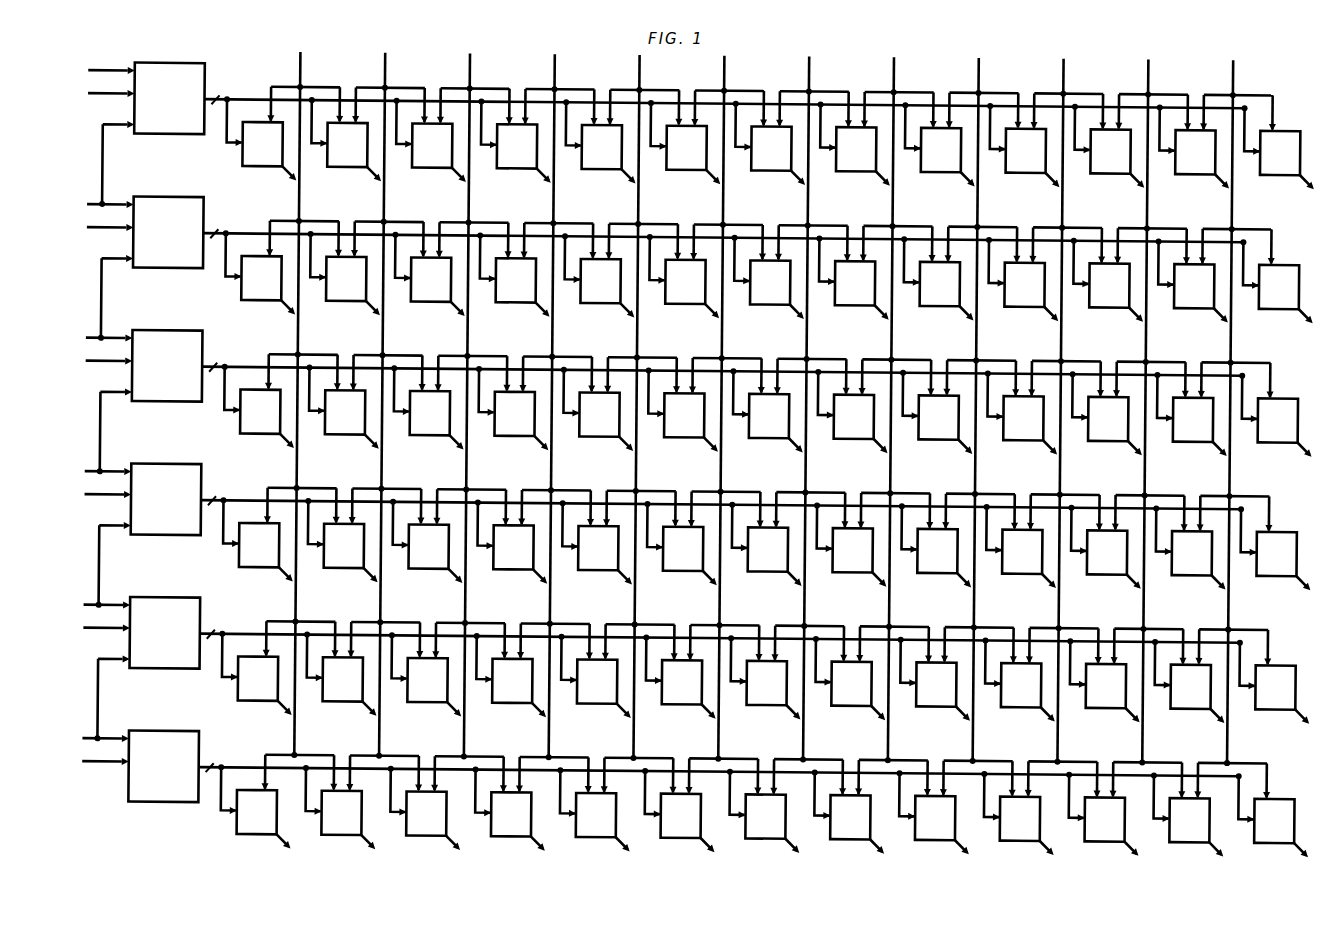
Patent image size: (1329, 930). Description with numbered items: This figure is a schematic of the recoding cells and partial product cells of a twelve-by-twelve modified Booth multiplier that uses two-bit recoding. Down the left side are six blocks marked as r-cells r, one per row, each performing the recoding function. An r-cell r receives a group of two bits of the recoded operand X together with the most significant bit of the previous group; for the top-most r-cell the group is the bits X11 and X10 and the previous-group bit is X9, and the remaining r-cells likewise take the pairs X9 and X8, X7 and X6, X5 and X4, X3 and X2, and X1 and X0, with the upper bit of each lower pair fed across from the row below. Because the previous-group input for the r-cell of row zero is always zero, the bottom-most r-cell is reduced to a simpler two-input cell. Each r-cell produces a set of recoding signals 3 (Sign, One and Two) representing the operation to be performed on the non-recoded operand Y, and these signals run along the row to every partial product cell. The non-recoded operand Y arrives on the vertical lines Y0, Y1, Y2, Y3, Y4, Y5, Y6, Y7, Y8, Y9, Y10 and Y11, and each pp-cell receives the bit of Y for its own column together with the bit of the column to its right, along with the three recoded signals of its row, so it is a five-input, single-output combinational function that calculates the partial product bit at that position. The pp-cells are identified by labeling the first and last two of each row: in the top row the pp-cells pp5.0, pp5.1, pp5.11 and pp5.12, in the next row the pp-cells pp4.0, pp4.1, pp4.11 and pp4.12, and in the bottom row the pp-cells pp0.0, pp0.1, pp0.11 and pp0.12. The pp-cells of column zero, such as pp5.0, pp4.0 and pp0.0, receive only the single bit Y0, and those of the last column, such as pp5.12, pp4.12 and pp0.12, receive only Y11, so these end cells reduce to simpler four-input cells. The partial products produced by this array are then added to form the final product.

The r-cell r is at (166, 433).
The set of recoding signals 3 is at (213, 423).
The recoded operand bit X0 is at (94, 761).
The recoded operand bit X1 is at (95, 738).
The recoded operand bit X2 is at (95, 627).
The recoded operand bit X3 is at (96, 604).
The recoded operand bit X4 is at (97, 494).
The recoded operand bit X5 is at (97, 471).
The recoded operand bit X6 is at (98, 360).
The recoded operand bit X7 is at (98, 337).
The recoded operand bit X8 is at (99, 227).
The recoded operand bit X9 is at (99, 204).
The recoded operand bit X10 is at (96, 93).
The recoded operand bit X11 is at (96, 70).
The non-recoded operand bit Y0 is at (311, 403).
The non-recoded operand bit Y1 is at (396, 404).
The non-recoded operand bit Y2 is at (481, 404).
The non-recoded operand bit Y3 is at (566, 405).
The non-recoded operand bit Y4 is at (650, 406).
The non-recoded operand bit Y5 is at (735, 407).
The non-recoded operand bit Y6 is at (820, 407).
The non-recoded operand bit Y7 is at (905, 408).
The non-recoded operand bit Y8 is at (990, 409).
The non-recoded operand bit Y9 is at (1074, 410).
The non-recoded operand bit Y10 is at (1163, 410).
The non-recoded operand bit Y11 is at (1248, 411).
The pp-cell pp5.0 is at (260, 139).
The pp-cell pp5.1 is at (345, 140).
The pp-cell pp5.11 is at (1193, 147).
The pp-cell pp5.12 is at (1278, 148).
The pp-cell pp4.0 is at (259, 273).
The pp-cell pp4.1 is at (344, 274).
The pp-cell pp4.11 is at (1192, 281).
The pp-cell pp4.12 is at (1277, 282).
The pp-cell pp0.0 is at (254, 807).
The pp-cell pp0.1 is at (339, 808).
The pp-cell pp0.11 is at (1187, 815).
The pp-cell pp0.12 is at (1272, 816).